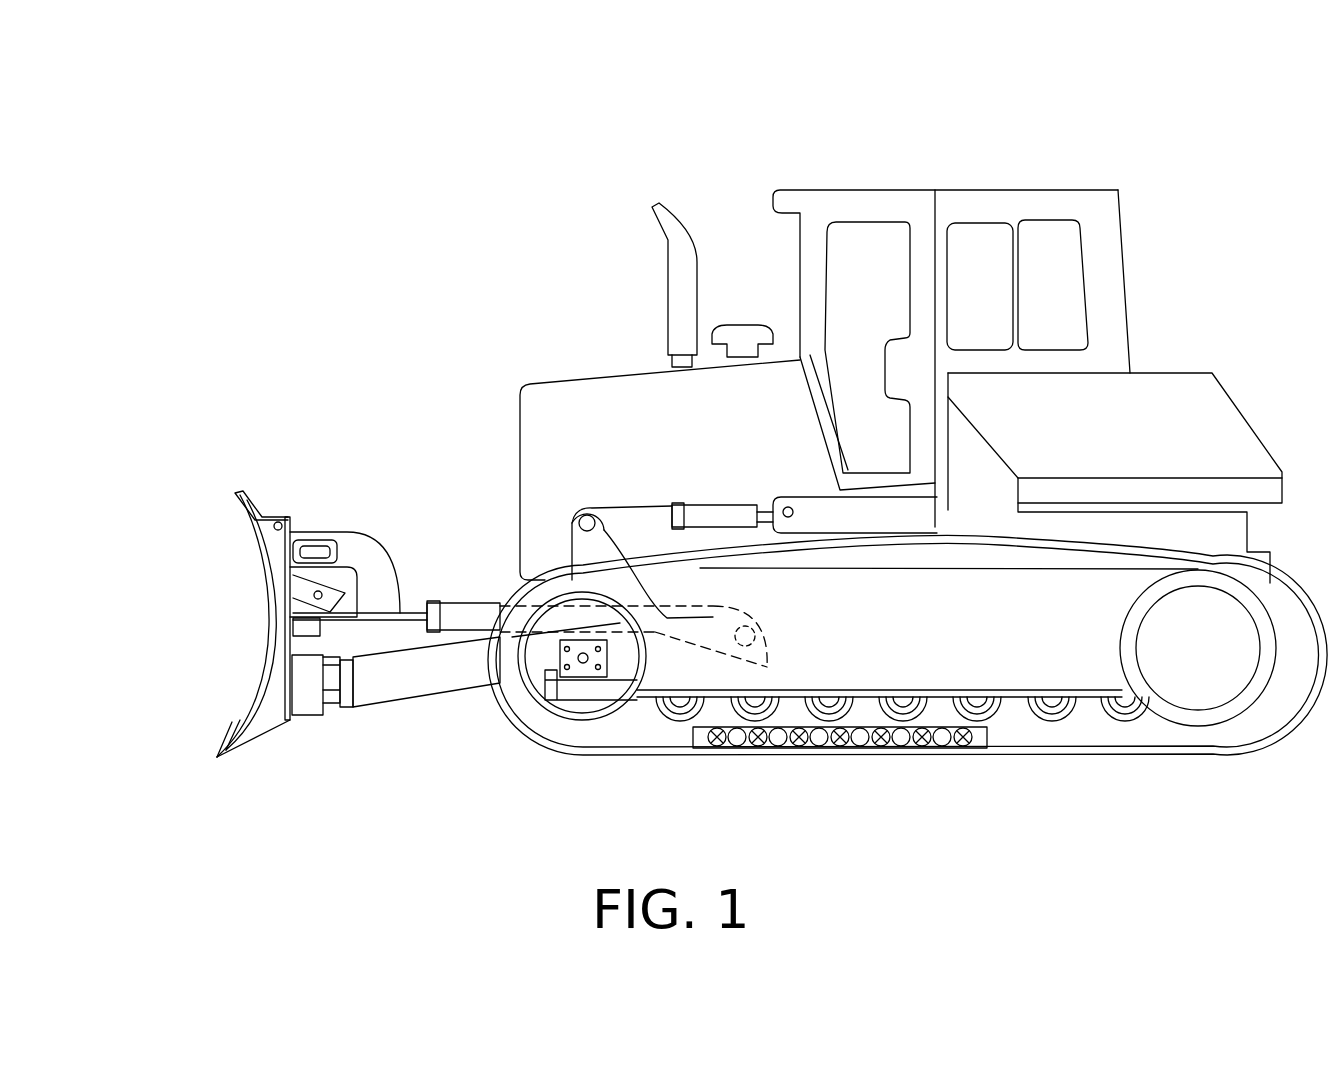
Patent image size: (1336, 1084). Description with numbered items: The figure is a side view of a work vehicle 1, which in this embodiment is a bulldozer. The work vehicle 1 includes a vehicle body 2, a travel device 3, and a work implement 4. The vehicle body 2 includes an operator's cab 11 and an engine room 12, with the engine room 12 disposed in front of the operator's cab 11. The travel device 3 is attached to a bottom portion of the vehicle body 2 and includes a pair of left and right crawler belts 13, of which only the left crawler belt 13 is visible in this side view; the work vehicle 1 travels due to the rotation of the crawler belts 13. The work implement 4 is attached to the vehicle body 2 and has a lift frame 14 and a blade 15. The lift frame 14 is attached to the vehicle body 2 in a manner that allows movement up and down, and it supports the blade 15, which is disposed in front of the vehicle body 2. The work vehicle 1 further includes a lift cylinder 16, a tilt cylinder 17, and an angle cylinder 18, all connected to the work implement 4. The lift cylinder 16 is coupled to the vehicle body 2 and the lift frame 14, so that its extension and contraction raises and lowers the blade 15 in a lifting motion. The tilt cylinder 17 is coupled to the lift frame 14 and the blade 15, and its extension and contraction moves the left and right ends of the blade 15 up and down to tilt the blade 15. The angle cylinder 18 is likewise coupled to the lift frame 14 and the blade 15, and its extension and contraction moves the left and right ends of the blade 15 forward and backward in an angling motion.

The work vehicle 1 is at (303, 168).
The vehicle body 2 is at (612, 278).
The travel device 3 is at (1168, 757).
The work implement 4 is at (371, 472).
The operator's cab 11 is at (912, 203).
The engine room 12 is at (740, 397).
The crawler belt 13 is at (1028, 757).
The lift frame 14 is at (440, 688).
The blade 15 is at (272, 595).
The lift cylinder 16 is at (713, 503).
The tilt cylinder 17 is at (288, 542).
The angle cylinder 18 is at (457, 615).